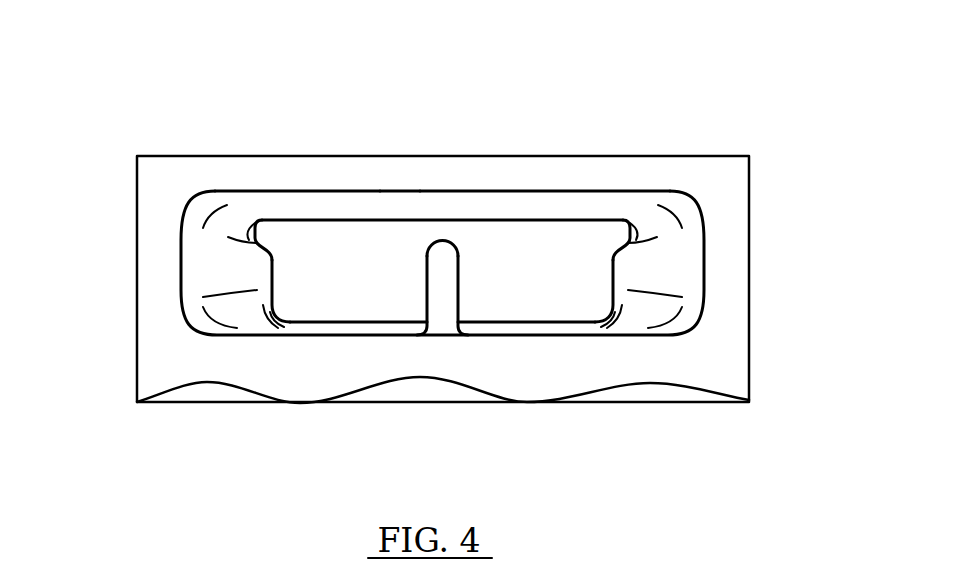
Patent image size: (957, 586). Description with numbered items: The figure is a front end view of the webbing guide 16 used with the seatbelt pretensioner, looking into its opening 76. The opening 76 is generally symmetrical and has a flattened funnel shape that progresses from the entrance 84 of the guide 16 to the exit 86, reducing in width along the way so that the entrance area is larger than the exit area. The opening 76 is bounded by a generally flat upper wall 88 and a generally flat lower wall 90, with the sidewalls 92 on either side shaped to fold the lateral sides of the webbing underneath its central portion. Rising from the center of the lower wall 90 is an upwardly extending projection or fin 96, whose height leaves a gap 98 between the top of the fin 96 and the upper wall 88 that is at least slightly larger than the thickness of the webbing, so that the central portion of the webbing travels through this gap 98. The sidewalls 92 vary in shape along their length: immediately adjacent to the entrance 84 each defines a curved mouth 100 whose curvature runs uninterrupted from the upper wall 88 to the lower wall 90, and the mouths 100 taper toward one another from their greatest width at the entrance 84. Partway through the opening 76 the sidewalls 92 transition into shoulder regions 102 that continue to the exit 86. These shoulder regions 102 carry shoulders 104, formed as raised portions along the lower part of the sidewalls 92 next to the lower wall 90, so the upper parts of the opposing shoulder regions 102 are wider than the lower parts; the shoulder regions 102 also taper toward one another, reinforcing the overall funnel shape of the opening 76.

The webbing guide 16 is at (136, 62).
The opening 76 is at (357, 183).
The entrance 84 is at (526, 192).
The exit 86 is at (358, 221).
The upper wall 88 is at (400, 201).
The lower wall 90 is at (363, 320).
The sidewalls 92 is at (217, 263).
The fin 96 is at (448, 293).
The gap 98 is at (453, 229).
The curved mouth 100 is at (201, 282).
The shoulder regions 102 is at (287, 287).
The shoulders 104 is at (276, 255).